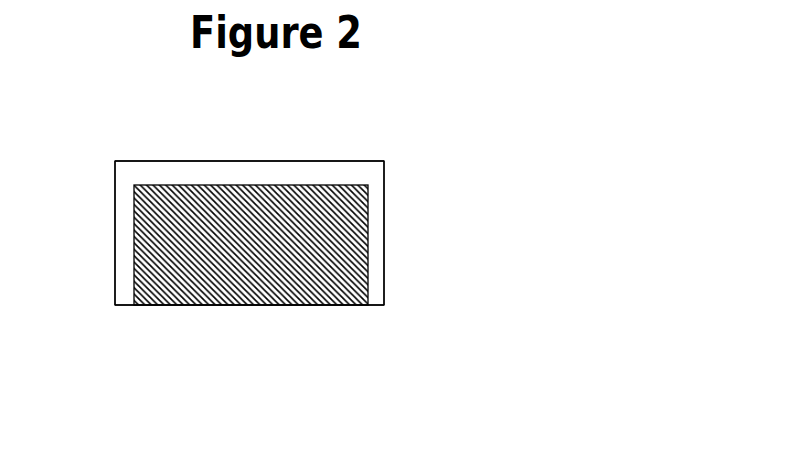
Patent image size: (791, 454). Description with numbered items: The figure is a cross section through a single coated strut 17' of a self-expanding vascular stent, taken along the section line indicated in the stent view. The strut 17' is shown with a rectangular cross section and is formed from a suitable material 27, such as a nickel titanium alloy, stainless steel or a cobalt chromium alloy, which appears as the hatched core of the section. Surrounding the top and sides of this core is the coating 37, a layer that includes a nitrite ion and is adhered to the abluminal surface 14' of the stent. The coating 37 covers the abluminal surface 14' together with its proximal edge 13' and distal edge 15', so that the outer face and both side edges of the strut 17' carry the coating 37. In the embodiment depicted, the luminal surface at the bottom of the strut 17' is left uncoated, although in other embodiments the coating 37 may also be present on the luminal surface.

The proximal edge 13' is at (74, 233).
The abluminal surface 14' is at (249, 131).
The distal edge 15' is at (420, 233).
The coated strut 17' is at (249, 362).
The material 27 is at (292, 306).
The coating 37 is at (336, 172).